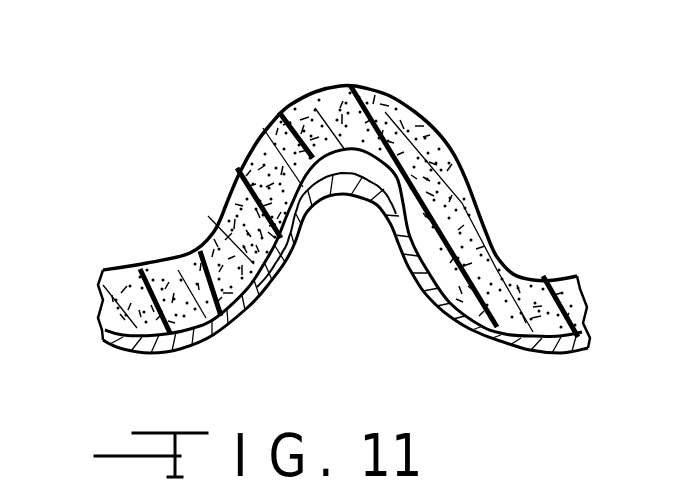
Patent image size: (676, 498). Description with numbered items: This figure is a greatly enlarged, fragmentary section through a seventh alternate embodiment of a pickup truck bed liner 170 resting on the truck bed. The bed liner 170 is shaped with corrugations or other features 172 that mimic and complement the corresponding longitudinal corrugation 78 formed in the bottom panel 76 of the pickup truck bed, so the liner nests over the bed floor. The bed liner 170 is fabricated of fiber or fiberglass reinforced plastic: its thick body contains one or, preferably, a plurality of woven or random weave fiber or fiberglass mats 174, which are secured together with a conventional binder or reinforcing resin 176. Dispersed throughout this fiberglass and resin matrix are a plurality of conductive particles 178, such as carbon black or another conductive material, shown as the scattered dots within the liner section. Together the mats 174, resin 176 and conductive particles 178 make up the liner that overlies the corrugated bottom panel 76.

The bed liner 170 is at (144, 158).
The corrugations 172 is at (403, 103).
The fiberglass mats 174 is at (265, 131).
The reinforcing resin 176 is at (535, 293).
The conductive particles 178 is at (437, 178).
The bottom panel 76 is at (510, 350).
The corrugations 78 is at (336, 193).